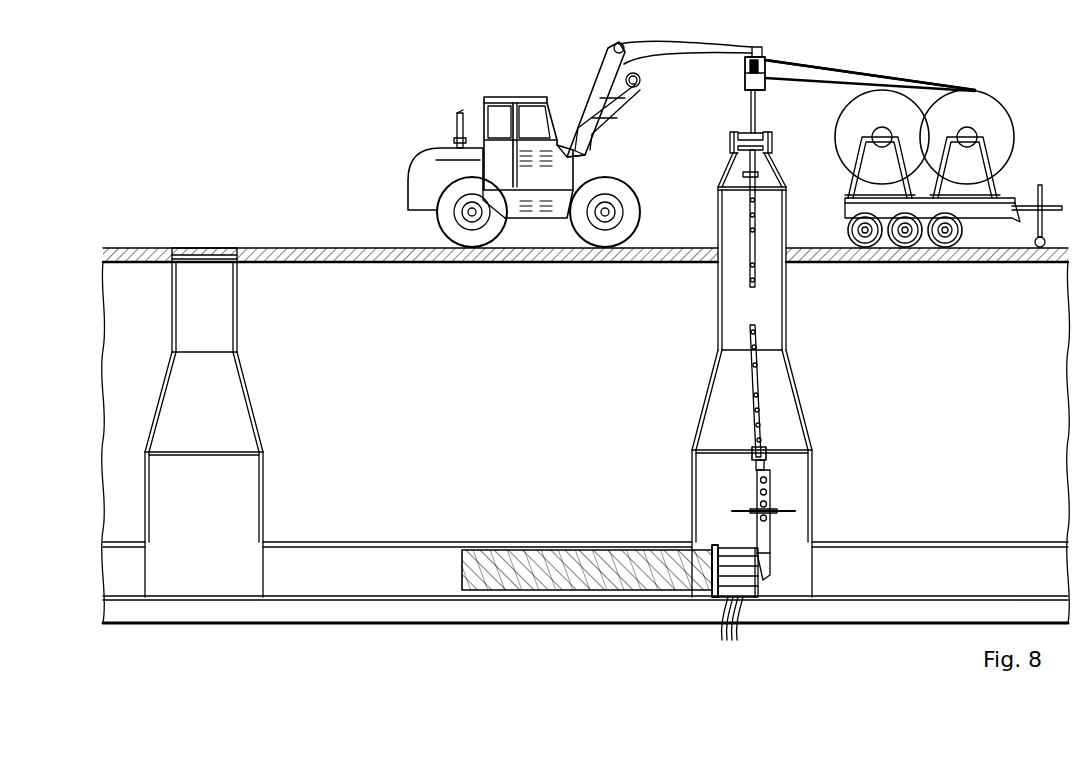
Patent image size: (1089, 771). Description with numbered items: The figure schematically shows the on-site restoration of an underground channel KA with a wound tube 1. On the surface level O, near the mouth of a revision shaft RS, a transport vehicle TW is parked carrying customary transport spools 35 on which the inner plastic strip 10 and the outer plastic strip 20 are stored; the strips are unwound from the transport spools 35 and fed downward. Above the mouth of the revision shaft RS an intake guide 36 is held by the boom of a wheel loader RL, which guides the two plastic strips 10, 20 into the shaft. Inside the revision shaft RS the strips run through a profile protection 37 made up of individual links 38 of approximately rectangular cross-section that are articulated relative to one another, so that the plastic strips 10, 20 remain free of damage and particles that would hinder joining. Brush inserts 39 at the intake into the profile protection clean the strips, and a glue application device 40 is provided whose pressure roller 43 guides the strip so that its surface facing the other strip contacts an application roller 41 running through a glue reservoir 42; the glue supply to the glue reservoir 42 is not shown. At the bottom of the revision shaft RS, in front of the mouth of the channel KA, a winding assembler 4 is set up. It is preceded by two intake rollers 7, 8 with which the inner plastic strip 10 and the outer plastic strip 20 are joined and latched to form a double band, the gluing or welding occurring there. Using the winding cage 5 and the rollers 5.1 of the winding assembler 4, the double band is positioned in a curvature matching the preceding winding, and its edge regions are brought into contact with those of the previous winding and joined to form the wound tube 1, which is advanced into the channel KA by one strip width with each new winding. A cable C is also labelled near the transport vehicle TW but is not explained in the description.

The wound tube 1 is at (575, 548).
The winding assembler 4 is at (742, 540).
The winding cage 5 is at (712, 548).
The rollers 5.1 is at (737, 634).
The intake roller 7 is at (752, 450).
The intake roller 8 is at (770, 450).
The inner plastic strip 10 is at (875, 70).
The outer plastic strip 20 is at (822, 82).
The transport spools 35 is at (860, 108).
The intake guide 36 is at (745, 70).
The profile protection 37 is at (764, 218).
The links 38 is at (748, 200).
The brush inserts 39 is at (758, 175).
The glue application device 40 is at (744, 128).
The application roller 41 is at (772, 150).
The glue reservoir 42 is at (732, 150).
The pressure roller 43 is at (745, 132).
The surface level O is at (146, 248).
The revision shaft RS is at (237, 300).
The wheel loader RL is at (438, 170).
The channel KA is at (436, 502).
The transport vehicle TW is at (1015, 208).
The cable C is at (1062, 245).